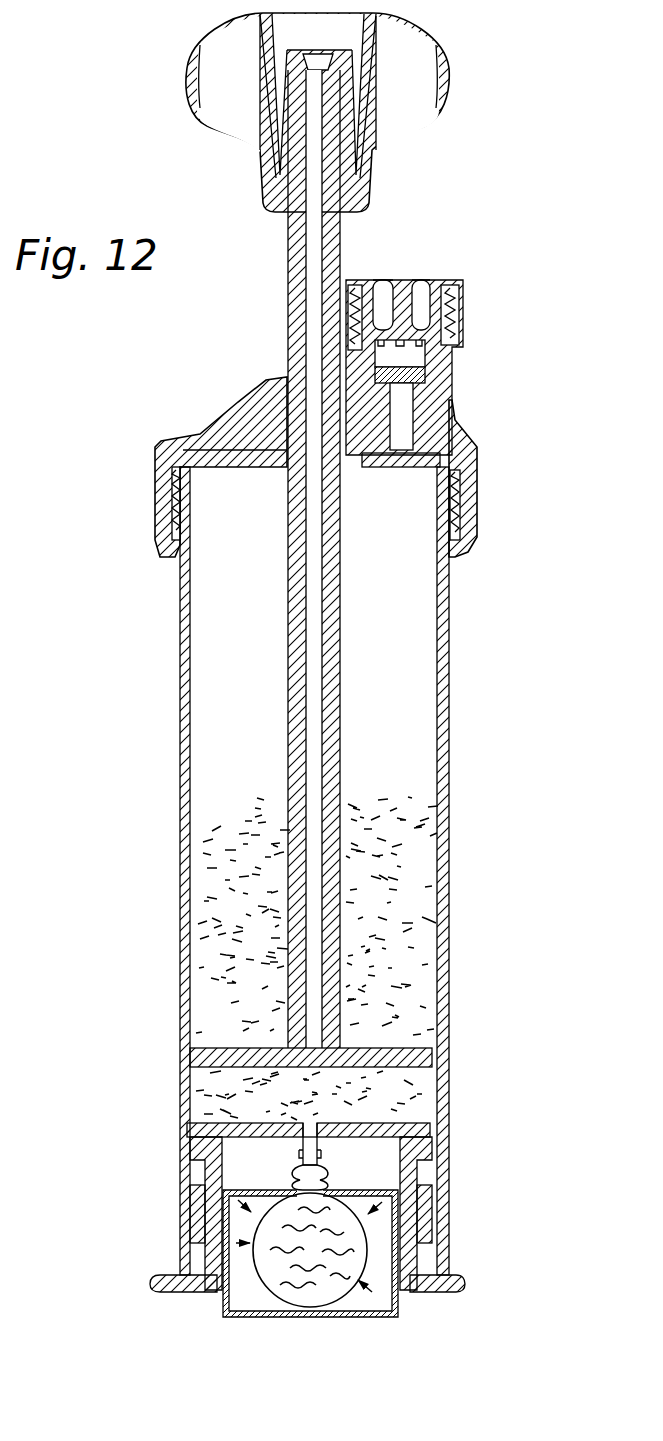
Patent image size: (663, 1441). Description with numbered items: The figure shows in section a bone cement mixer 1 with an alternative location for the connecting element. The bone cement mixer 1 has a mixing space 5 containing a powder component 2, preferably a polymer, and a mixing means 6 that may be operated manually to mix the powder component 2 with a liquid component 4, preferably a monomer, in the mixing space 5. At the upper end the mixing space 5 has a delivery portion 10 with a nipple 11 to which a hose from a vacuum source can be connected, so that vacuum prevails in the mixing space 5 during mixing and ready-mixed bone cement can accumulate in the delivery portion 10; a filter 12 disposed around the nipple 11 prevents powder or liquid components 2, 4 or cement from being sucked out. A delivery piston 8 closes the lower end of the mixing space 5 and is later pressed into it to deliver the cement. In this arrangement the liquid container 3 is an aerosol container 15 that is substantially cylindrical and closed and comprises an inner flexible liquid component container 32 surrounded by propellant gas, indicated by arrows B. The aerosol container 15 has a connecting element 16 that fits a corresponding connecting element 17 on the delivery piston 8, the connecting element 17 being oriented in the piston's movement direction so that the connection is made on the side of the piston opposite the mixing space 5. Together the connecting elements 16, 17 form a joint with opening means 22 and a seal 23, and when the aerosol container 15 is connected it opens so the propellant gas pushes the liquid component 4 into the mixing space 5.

The bone cement mixer 1 is at (150, 705).
The powder component 2 is at (232, 848).
The liquid container 3 is at (208, 1273).
The liquid component 4 is at (270, 1237).
The mixing space 5 is at (188, 890).
The mixing means 6 is at (280, 652).
The delivery piston 8 is at (208, 1140).
The delivery portion 10 is at (373, 508).
The nipple 11 is at (428, 390).
The filter 12 is at (232, 462).
The aerosol container 15 is at (400, 1233).
The connecting element 16 is at (330, 1162).
The connecting element 17 is at (292, 1142).
The opening means 22 is at (318, 1140).
The seal 23 is at (335, 1180).
The inner flexible liquid component container 32 is at (357, 1272).
The propellant gas arrows B is at (247, 1278).